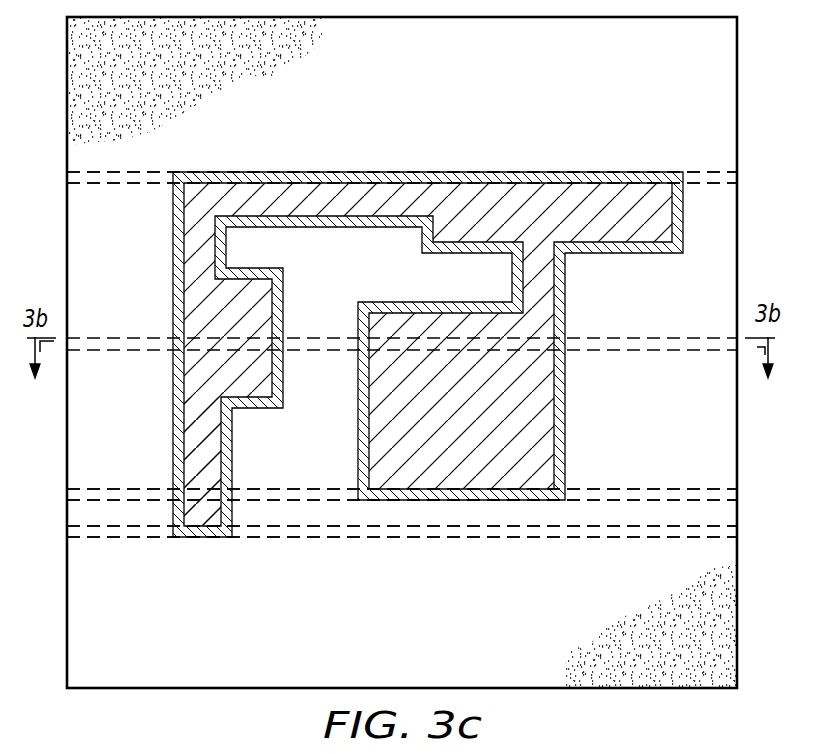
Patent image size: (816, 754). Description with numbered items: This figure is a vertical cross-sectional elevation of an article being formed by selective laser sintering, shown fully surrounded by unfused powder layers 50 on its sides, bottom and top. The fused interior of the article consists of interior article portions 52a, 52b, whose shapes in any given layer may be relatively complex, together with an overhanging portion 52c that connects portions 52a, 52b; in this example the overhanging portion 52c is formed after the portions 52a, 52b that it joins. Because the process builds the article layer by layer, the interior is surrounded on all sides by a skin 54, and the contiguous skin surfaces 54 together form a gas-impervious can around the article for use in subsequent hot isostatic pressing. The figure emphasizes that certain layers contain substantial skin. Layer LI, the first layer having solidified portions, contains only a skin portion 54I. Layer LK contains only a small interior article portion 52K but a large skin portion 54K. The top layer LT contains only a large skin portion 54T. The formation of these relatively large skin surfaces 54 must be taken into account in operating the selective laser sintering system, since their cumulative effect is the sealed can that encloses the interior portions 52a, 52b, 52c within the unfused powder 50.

The layer of unfused powder 50 is at (415, 624).
The interior article portion 52a is at (248, 320).
The interior article portion 52b is at (482, 414).
The overhanging portion 52c is at (255, 192).
The interior article portion 52K is at (213, 496).
The skin 54 is at (227, 253).
The skin portion 54T is at (420, 176).
The skin portion 54I is at (198, 538).
The skin portion 54K is at (452, 496).
The top layer LT is at (737, 176).
The layer LK is at (737, 494).
The layer LI is at (737, 533).